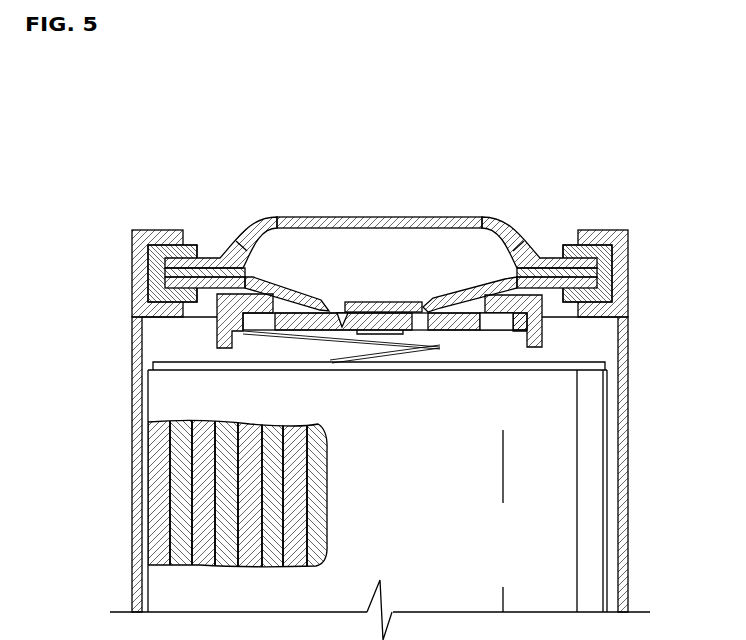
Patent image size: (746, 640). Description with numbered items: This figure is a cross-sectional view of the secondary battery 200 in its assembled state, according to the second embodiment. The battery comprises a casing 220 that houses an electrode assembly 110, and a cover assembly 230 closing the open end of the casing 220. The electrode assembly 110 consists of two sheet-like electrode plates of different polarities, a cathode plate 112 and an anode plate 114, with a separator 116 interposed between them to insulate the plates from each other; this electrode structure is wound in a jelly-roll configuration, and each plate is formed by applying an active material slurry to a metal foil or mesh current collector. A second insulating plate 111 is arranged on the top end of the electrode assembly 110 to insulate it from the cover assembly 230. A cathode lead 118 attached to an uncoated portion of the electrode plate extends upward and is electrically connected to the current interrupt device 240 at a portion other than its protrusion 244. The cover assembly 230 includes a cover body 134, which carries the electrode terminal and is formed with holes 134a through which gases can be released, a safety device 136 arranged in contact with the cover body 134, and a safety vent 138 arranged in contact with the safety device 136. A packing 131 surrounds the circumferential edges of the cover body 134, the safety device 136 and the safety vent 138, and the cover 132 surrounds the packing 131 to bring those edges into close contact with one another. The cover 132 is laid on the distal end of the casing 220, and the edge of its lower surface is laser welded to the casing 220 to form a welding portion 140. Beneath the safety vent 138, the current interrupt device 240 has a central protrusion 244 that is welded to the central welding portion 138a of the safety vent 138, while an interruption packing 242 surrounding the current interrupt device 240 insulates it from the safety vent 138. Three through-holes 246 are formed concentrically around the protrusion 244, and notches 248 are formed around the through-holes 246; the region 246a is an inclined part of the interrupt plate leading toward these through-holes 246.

The secondary battery 200 is at (92, 176).
The cover assembly 230 is at (167, 190).
The casing 220 is at (120, 304).
The cover 132 is at (157, 234).
The packing 131 is at (587, 248).
The cover body 134 is at (345, 216).
The holes 134a is at (513, 219).
The safety device 136 is at (381, 250).
The safety vent 138 is at (590, 283).
The welding portion 138a is at (384, 302).
The welding portion 140 is at (132, 318).
The electrode assembly 110 is at (145, 418).
The cathode plate 112 is at (160, 470).
The anode plate 114 is at (204, 527).
The separator 116 is at (183, 497).
The second insulating plate 111 is at (565, 362).
The cathode lead 118 is at (420, 344).
The current interrupt device 240 is at (496, 350).
The interruption packing 242 is at (532, 322).
The protrusion 244 is at (378, 316).
The through-holes 246 is at (500, 322).
The inclined portion of sub-plate 246a is at (424, 312).
The notches 248 is at (342, 312).